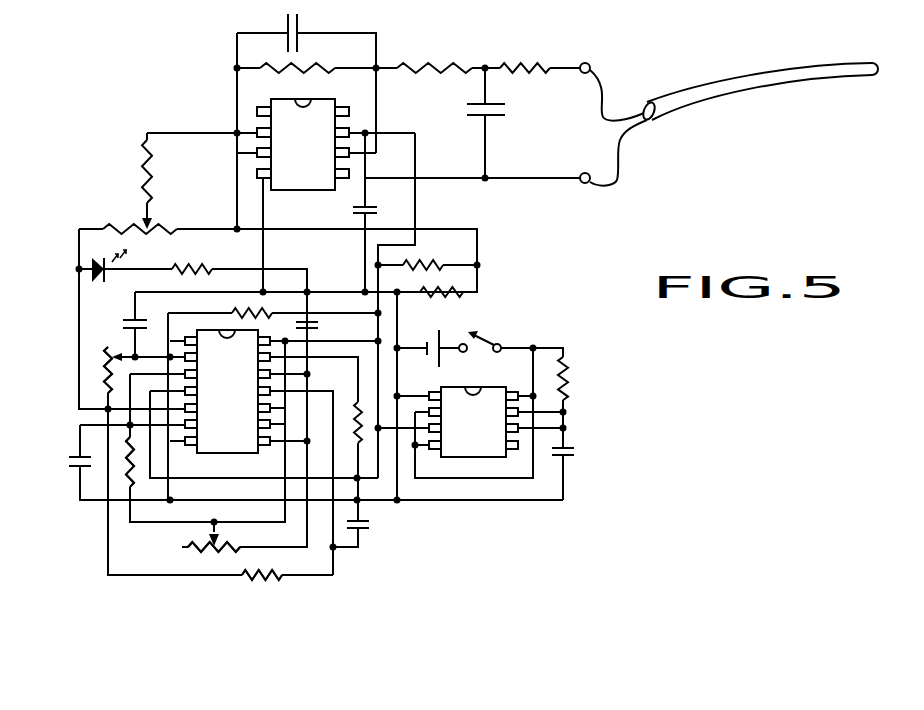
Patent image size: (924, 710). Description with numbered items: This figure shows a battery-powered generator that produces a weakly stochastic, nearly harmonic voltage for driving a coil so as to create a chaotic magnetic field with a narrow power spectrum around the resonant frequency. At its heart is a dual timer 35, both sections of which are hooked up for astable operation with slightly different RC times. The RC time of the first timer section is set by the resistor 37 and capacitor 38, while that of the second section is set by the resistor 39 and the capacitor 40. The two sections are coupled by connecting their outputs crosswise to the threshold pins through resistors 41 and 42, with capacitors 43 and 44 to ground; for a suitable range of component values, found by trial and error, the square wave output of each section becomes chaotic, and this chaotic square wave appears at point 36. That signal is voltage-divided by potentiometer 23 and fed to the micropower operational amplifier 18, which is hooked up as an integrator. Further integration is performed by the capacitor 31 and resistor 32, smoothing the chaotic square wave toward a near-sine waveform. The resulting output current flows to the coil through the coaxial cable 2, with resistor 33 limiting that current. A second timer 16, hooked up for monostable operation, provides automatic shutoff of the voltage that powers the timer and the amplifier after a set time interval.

The coaxial cable 2 is at (735, 95).
The second timer 16 is at (475, 437).
The operational amplifier 18 is at (288, 177).
The potentiometer 23 is at (125, 218).
The capacitor 31 is at (551, 123).
The resistor 32 is at (422, 63).
The resistor 33 is at (548, 62).
The dual timer 35 is at (227, 430).
The point 36 is at (72, 410).
The resistor 37 is at (100, 370).
The capacitor 38 is at (118, 315).
The resistor 39 is at (210, 555).
The capacitor 40 is at (325, 325).
The resistor 41 is at (120, 467).
The resistor 42 is at (260, 583).
The capacitor 43 is at (67, 450).
The capacitor 44 is at (378, 523).